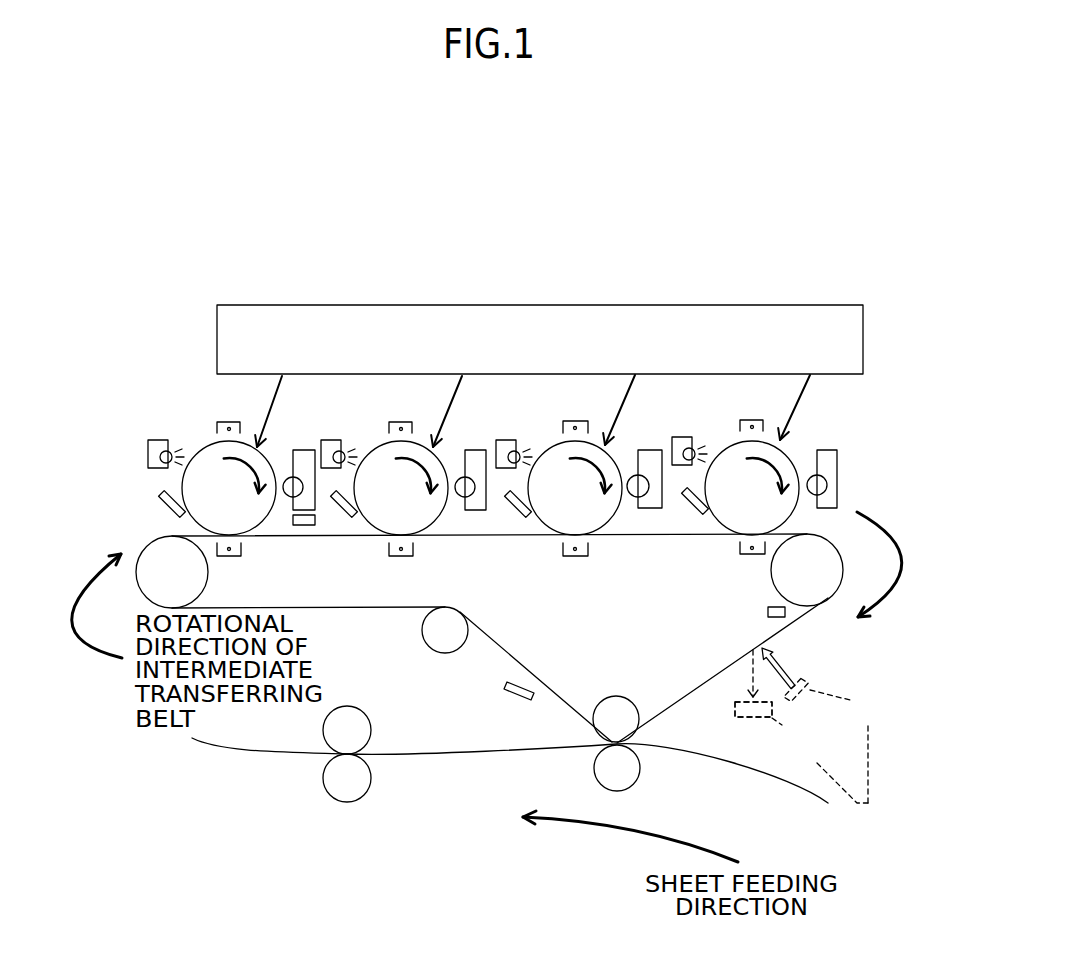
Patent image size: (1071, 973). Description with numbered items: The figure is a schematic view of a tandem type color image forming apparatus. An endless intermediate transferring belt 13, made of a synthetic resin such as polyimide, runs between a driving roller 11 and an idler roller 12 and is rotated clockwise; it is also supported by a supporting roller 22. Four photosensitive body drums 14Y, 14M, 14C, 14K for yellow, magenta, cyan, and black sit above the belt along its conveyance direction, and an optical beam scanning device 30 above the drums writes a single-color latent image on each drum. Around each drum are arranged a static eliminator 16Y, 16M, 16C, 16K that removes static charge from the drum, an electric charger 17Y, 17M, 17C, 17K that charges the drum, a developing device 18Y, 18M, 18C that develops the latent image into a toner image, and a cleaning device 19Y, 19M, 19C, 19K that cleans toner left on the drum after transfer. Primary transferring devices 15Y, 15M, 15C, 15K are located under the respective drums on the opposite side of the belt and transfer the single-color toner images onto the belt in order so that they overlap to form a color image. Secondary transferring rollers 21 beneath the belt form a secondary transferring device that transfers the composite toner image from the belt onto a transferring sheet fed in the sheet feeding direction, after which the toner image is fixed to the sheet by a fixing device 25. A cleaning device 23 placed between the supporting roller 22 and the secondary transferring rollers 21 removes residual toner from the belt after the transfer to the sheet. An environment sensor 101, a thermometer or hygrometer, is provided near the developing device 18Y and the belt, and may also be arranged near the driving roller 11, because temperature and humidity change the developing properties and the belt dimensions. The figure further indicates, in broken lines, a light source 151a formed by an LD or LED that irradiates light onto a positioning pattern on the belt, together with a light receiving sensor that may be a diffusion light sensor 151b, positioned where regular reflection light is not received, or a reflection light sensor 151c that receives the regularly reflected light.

The optical beam scanning device 30 is at (357, 353).
The driving roller 11 is at (827, 570).
The idler roller 12 is at (150, 582).
The intermediate transferring belt 13 is at (783, 615).
The environment sensor 101 is at (302, 525).
The light source 151a is at (810, 688).
The diffusion light sensor 151b is at (745, 717).
The reflection light sensor 151c is at (758, 770).
The photosensitive body drum 14Y is at (215, 482).
The photosensitive body drum 14M is at (433, 513).
The photosensitive body drum 14C is at (612, 518).
The photosensitive body drum 14K is at (797, 463).
The primary transferring device 15Y is at (238, 556).
The primary transferring device 15M is at (400, 557).
The primary transferring device 15C is at (577, 557).
The primary transferring device 15K is at (740, 550).
The static eliminator 16Y is at (148, 442).
The static eliminator 16M is at (343, 438).
The static eliminator 16C is at (518, 438).
The static eliminator 16K is at (690, 437).
The electric charger 17Y is at (218, 422).
The electric charger 17M is at (419, 383).
The electric charger 17C is at (588, 421).
The electric charger 17K is at (763, 420).
The developing device 18Y is at (302, 460).
The developing device 18M is at (475, 452).
The developing device 18C is at (650, 450).
The cleaning device 19Y is at (167, 507).
The cleaning device 19M is at (340, 507).
The cleaning device 19C is at (517, 510).
The cleaning device 19K is at (688, 507).
The secondary transferring rollers 21 is at (615, 782).
The supporting roller 22 is at (432, 633).
The cleaning device 23 is at (508, 690).
The fixing device 25 is at (347, 775).